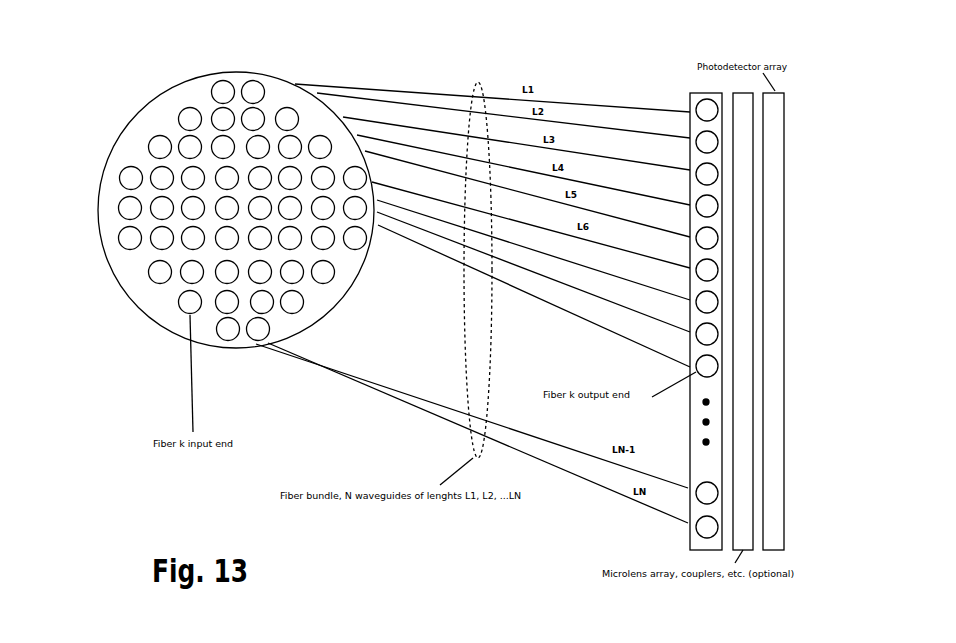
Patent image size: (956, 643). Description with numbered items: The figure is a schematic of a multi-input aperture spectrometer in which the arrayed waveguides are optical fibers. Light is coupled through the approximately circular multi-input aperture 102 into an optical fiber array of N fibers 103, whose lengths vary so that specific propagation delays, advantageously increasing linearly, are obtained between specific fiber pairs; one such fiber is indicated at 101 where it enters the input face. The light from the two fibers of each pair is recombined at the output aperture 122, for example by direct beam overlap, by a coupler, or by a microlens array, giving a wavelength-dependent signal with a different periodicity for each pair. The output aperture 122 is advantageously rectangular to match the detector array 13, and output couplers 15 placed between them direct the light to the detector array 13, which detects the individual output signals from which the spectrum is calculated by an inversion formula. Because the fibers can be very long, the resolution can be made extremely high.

The optical fiber input end 101 is at (126, 208).
The multi-input aperture 102 is at (146, 123).
The optical fibers 103 is at (290, 110).
The output aperture 122 is at (690, 98).
The detector array 13 is at (778, 137).
The output couplers 15 is at (745, 542).